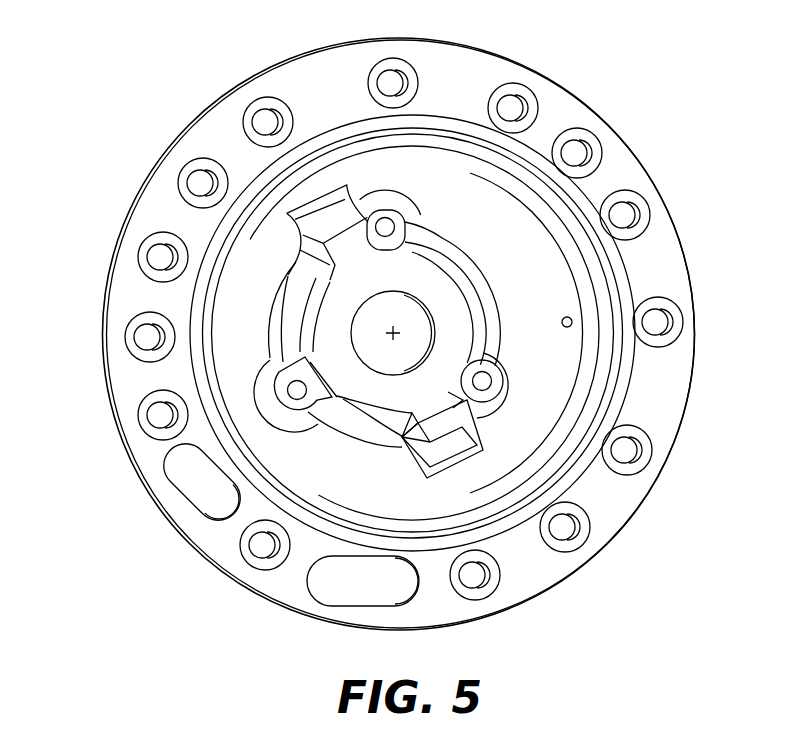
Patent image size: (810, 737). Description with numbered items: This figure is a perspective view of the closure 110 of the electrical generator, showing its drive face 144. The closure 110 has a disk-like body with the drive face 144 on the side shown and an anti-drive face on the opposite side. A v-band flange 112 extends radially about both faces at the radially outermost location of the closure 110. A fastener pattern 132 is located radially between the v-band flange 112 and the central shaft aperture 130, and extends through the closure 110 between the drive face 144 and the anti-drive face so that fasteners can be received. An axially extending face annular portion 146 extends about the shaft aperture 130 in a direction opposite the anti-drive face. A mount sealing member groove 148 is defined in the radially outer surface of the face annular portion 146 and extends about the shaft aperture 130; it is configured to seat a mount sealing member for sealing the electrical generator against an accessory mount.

The closure 110 is at (223, 597).
The v-band flange 112 is at (128, 468).
The shaft aperture 130 is at (393, 333).
The fastener pattern 132 is at (565, 532).
The drive face 144 is at (333, 455).
The face annular portion 146 is at (216, 261).
The mount sealing member groove 148 is at (215, 227).